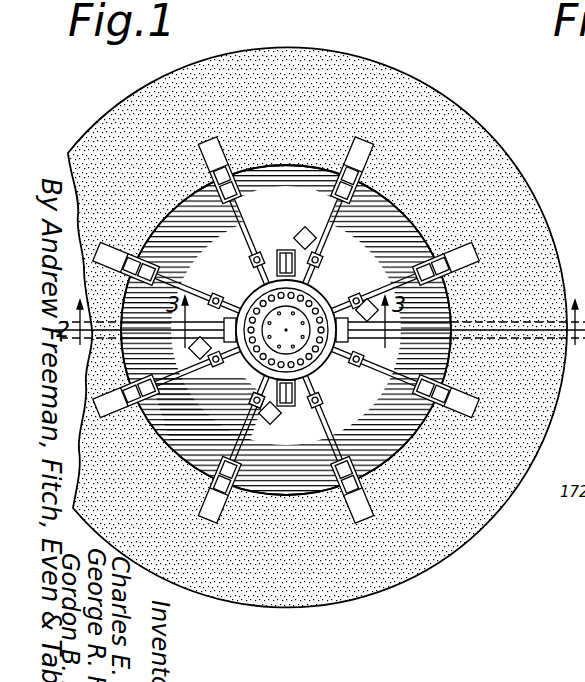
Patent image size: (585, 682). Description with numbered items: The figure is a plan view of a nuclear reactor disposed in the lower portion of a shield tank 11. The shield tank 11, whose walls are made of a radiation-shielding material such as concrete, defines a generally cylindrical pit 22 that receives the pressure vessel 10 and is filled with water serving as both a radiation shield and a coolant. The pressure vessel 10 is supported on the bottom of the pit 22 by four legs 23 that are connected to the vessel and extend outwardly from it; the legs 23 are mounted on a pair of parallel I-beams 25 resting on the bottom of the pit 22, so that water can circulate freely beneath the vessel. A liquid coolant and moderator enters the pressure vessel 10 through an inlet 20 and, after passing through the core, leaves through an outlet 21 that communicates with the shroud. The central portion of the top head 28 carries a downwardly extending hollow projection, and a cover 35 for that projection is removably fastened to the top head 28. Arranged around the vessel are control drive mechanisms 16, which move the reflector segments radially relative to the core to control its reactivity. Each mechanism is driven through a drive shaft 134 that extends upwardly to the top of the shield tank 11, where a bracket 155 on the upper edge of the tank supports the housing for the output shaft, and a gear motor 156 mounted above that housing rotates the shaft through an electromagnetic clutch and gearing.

The pressure vessel 10 is at (318, 282).
The shield tank 11 is at (355, 588).
The control drive mechanisms 16 is at (340, 172).
The inlet 20 is at (198, 358).
The outlet 21 is at (370, 343).
The pit 22 is at (388, 446).
The legs 23 is at (300, 232).
The I-beams 25 is at (252, 290).
The top head 28 is at (262, 372).
The cover 35 is at (332, 300).
The drive shaft 134 is at (348, 430).
The bracket 155 is at (470, 258).
The gear motor 156 is at (455, 276).